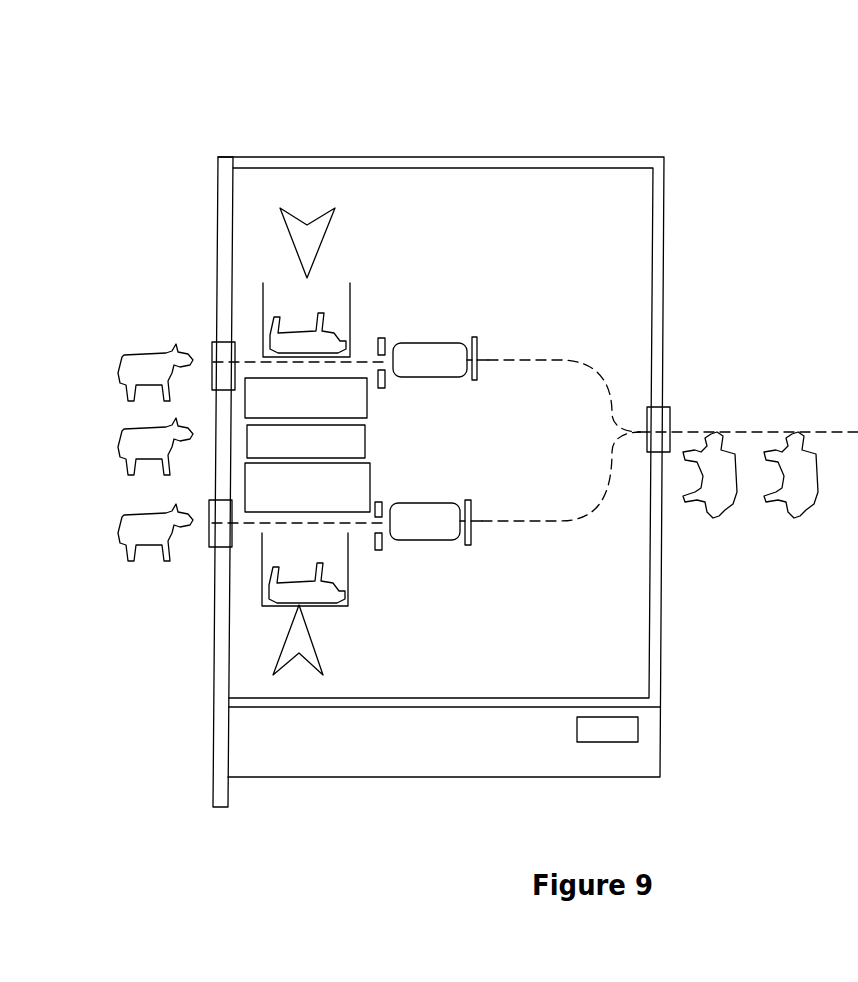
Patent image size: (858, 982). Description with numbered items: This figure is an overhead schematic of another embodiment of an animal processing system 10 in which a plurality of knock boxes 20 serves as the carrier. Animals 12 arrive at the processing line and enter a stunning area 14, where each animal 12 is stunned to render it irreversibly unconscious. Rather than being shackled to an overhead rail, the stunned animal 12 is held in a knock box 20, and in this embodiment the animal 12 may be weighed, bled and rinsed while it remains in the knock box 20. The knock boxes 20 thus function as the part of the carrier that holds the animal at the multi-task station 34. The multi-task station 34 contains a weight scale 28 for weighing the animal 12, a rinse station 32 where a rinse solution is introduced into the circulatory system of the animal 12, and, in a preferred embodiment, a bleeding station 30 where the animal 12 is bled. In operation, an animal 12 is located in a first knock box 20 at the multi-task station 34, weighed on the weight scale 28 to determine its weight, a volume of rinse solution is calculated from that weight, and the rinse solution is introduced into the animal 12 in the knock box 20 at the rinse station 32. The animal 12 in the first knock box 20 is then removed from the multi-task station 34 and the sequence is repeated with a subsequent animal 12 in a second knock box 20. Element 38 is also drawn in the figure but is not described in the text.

The animal processing system 10 is at (766, 634).
The animal 12 is at (285, 335).
The stunning area 14 is at (310, 162).
The knock box 20 is at (353, 293).
The weight scale 28 is at (357, 407).
The bleeding station 30 is at (365, 441).
The rinse station 32 is at (436, 363).
The multi-task station 34 is at (400, 97).
The controller 38 is at (630, 730).